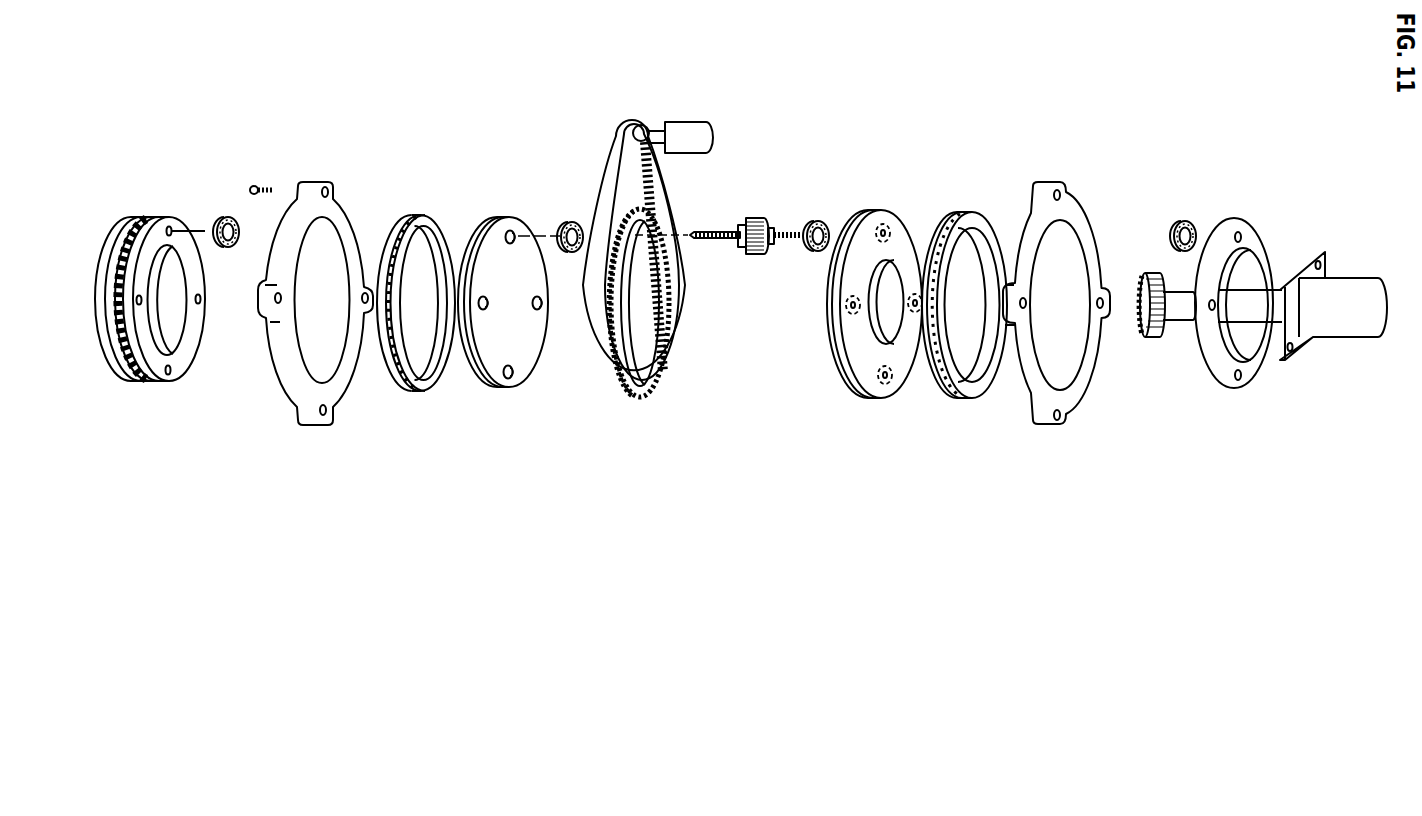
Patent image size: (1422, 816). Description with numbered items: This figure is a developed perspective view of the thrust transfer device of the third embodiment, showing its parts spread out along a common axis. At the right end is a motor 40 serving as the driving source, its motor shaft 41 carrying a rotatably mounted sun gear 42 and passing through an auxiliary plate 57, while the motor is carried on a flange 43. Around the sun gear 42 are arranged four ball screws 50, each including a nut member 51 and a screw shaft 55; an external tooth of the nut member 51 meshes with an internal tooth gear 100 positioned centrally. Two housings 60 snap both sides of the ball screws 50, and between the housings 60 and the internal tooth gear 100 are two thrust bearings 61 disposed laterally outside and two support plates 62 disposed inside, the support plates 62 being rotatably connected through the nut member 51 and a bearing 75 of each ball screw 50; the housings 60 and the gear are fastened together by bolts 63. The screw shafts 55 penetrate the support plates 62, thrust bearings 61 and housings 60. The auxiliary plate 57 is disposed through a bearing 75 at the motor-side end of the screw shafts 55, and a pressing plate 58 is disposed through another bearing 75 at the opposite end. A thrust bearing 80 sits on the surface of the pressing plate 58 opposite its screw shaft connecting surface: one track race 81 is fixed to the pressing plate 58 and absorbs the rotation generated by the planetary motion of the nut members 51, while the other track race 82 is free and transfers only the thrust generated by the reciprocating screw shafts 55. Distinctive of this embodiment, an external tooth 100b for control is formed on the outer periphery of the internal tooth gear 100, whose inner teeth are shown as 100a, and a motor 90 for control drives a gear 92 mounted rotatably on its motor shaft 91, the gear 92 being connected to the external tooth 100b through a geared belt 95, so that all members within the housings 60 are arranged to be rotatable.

The motor 40 is at (1328, 330).
The motor shaft 41 is at (1262, 296).
The sun gear 42 is at (1147, 337).
The motor mounting flange 43 is at (1285, 362).
The ball screw 50 is at (757, 215).
The nut member 51 is at (748, 248).
The screw shaft 55 is at (790, 232).
The auxiliary plate 57 is at (1222, 388).
The pressing plate 58 is at (168, 222).
The housing 60 is at (320, 180).
The thrust bearing 61 is at (422, 393).
The support plate 62 is at (510, 390).
The bolt 63 is at (262, 183).
The bearing 75 is at (228, 216).
The thrust bearing 80 is at (100, 156).
The track race 81 is at (145, 216).
The track race 82 is at (128, 216).
The motor for control 90 is at (697, 117).
The motor shaft 91 is at (660, 128).
The gear for control 92 is at (645, 120).
The geared belt 95 is at (614, 143).
The internal tooth gear 100 is at (640, 392).
The outer gear teeth 100a is at (667, 385).
The external tooth for control 100b is at (650, 200).